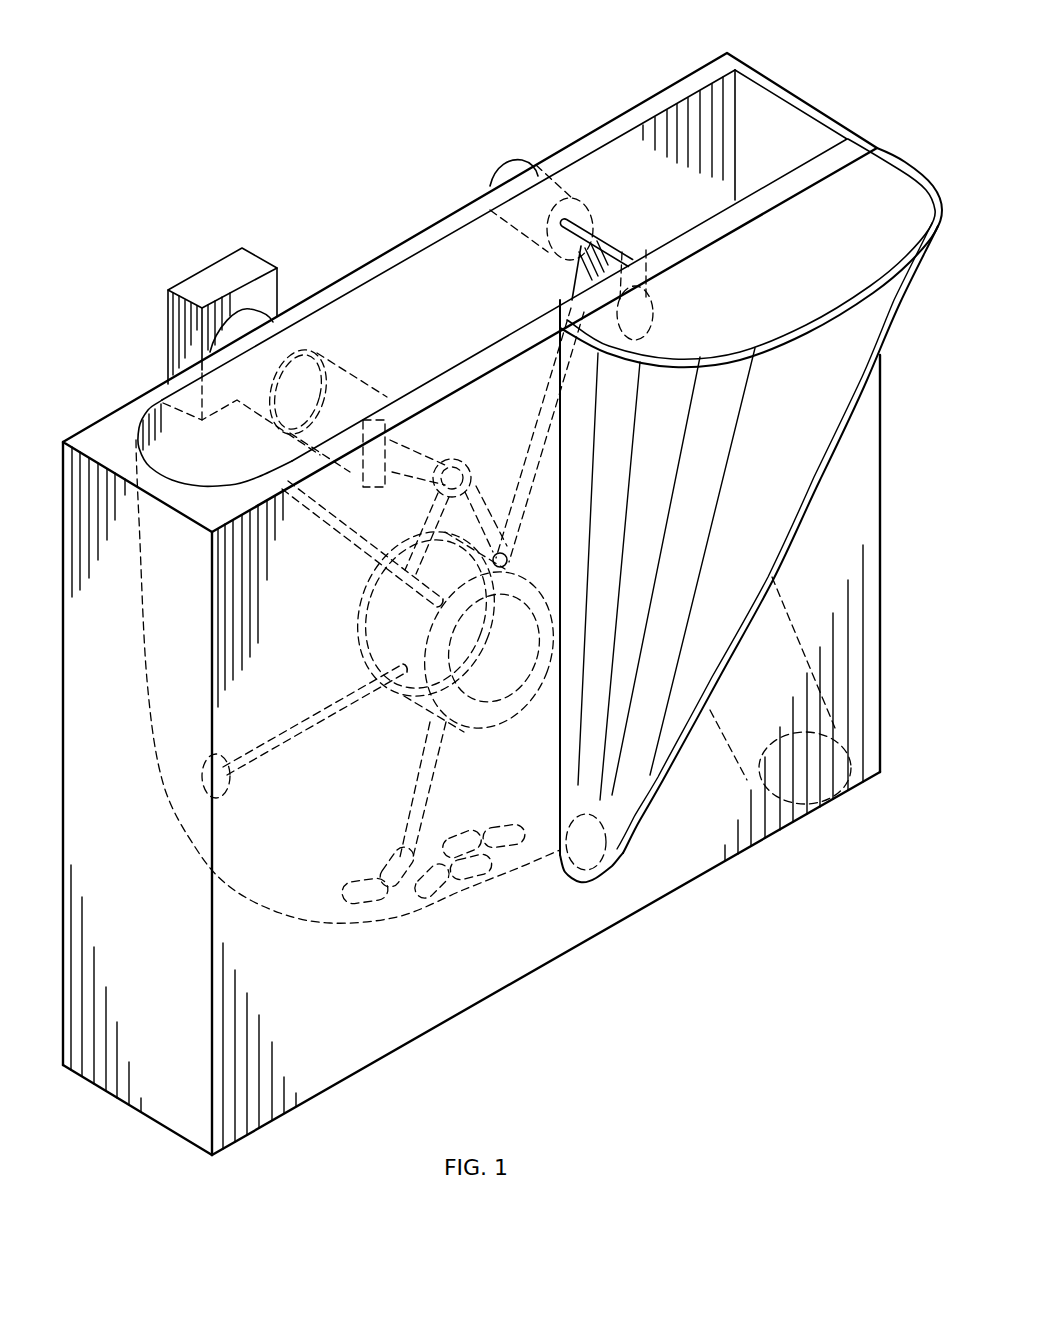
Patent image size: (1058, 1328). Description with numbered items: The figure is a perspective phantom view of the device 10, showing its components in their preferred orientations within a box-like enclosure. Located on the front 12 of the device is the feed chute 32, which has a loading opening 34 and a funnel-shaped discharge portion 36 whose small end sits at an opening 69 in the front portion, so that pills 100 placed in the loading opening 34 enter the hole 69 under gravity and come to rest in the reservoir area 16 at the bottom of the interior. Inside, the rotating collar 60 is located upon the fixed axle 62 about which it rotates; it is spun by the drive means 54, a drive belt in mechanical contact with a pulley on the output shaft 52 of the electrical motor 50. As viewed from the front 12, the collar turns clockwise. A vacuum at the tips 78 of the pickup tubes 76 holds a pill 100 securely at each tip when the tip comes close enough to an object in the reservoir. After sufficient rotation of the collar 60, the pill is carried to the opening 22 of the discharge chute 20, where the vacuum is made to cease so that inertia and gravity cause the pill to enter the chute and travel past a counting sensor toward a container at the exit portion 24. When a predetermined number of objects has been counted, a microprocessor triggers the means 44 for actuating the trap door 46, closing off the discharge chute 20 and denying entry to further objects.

The device 10 is at (426, 212).
The front 12 is at (883, 640).
The reservoir area 16 is at (337, 907).
The discharge chute 20 is at (672, 331).
The opening 22 is at (635, 308).
The exit portion 24 is at (800, 806).
The feed chute 32 is at (897, 321).
The loading opening 34 is at (872, 203).
The discharge portion 36 is at (614, 864).
The means for actuating trap door 44 is at (530, 218).
The trap door 46 is at (588, 277).
The electrical motor 50 is at (320, 382).
The output shaft 52 is at (455, 468).
The drive means 54 is at (383, 628).
The rotating collar 60 is at (408, 714).
The fixed axle 62 is at (497, 690).
The opening 69 is at (608, 845).
The pickup tubes 76 is at (365, 556).
The tips 78 is at (290, 478).
The pills 100 is at (205, 768).